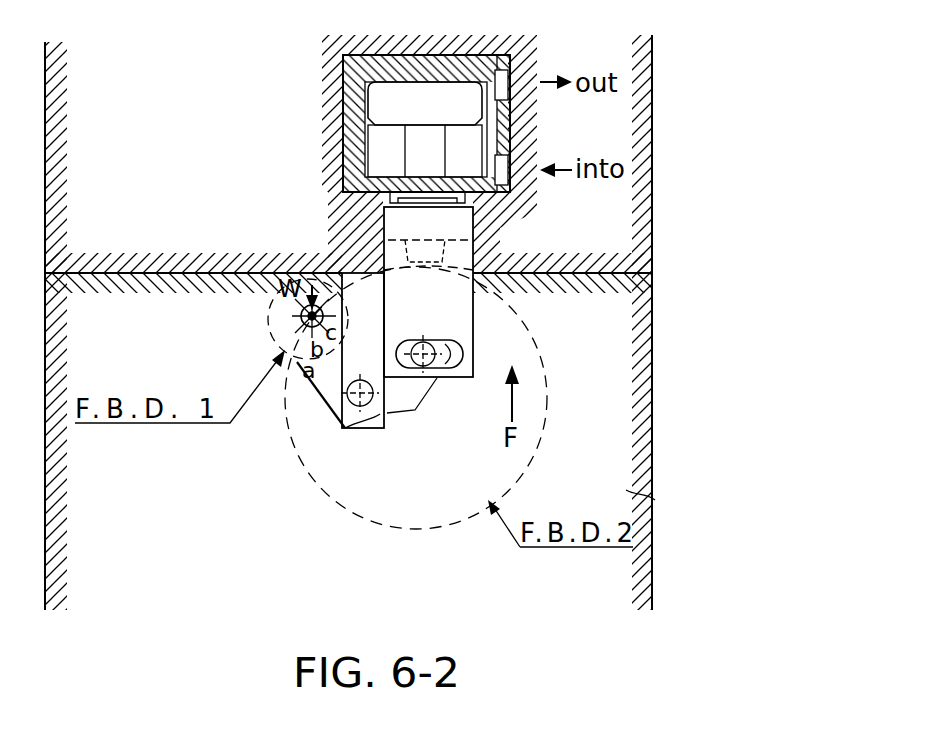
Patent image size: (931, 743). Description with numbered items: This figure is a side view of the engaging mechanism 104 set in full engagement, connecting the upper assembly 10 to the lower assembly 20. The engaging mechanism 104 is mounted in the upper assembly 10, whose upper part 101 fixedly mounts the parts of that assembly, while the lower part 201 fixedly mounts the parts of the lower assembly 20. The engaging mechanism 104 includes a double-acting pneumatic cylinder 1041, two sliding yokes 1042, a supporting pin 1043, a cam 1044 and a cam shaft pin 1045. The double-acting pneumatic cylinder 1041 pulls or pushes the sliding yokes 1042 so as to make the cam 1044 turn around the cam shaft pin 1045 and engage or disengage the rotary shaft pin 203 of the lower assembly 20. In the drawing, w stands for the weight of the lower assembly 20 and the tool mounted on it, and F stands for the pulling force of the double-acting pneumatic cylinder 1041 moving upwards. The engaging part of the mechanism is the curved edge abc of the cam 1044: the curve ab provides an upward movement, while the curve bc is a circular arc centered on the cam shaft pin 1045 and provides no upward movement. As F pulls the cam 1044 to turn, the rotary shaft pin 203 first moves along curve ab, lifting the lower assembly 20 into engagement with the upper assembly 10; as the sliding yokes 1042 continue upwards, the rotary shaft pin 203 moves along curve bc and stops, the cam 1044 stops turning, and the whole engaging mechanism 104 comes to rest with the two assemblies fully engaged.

The upper assembly 10 is at (652, 183).
The lower assembly 20 is at (655, 424).
The lower part 201 is at (655, 500).
The upper part 101 is at (627, 67).
The double-acting pneumatic cylinder 1041 is at (508, 112).
The engaging mechanism 104 is at (473, 228).
The sliding yokes 1042 is at (455, 296).
The supporting pin 1043 is at (462, 355).
The cam 1044 is at (322, 400).
The cam shaft pin 1045 is at (347, 428).
The rotary shaft pin 203 is at (290, 315).